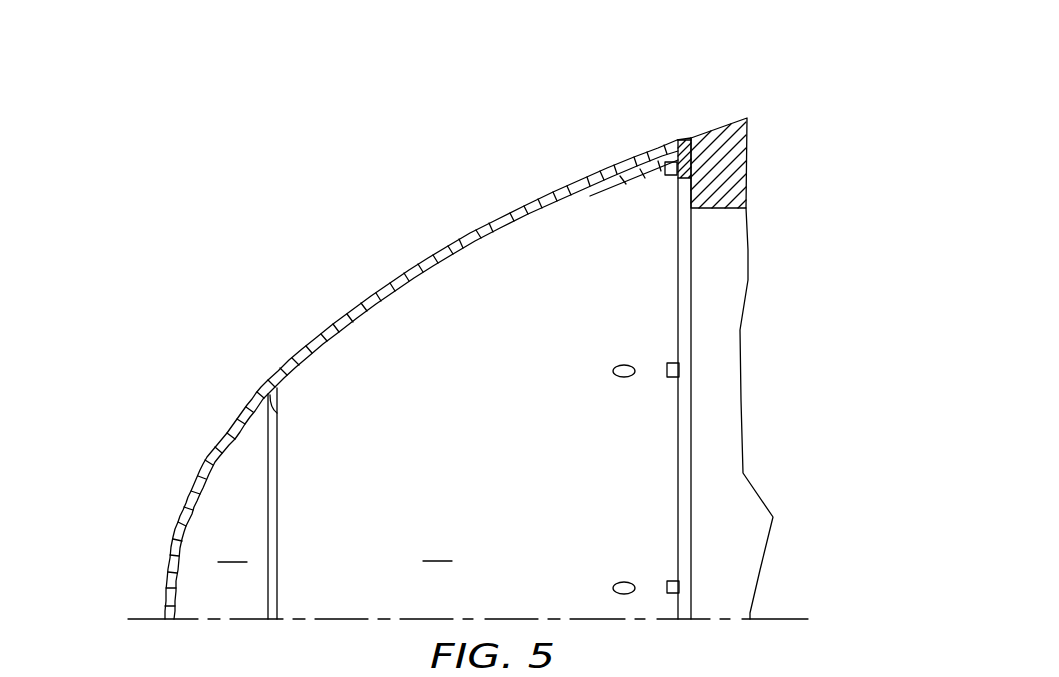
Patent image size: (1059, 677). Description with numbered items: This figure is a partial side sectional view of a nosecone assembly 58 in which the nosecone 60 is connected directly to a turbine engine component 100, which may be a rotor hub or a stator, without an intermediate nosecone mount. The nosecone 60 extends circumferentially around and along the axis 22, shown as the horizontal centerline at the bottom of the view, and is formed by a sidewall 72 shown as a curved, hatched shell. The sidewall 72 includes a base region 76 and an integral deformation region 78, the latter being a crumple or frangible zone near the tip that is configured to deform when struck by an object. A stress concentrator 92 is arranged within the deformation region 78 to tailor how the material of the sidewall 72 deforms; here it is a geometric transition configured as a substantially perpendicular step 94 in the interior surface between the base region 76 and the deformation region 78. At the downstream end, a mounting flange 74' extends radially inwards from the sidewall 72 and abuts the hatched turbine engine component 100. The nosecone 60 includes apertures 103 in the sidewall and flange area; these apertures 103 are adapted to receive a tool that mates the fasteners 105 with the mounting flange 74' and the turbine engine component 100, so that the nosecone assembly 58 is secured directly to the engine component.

The axis 22 is at (795, 610).
The nosecone assembly 58 is at (190, 235).
The nosecone 60 is at (458, 229).
The sidewall 72 is at (393, 283).
The mounting flange 74' is at (651, 378).
The base region 76 is at (678, 78).
The deformation region 78 is at (275, 80).
The stress concentrator 92 is at (286, 473).
The step 94 is at (277, 413).
The turbine engine component 100 is at (750, 170).
The apertures 103 is at (613, 168).
The fasteners 105 is at (684, 140).